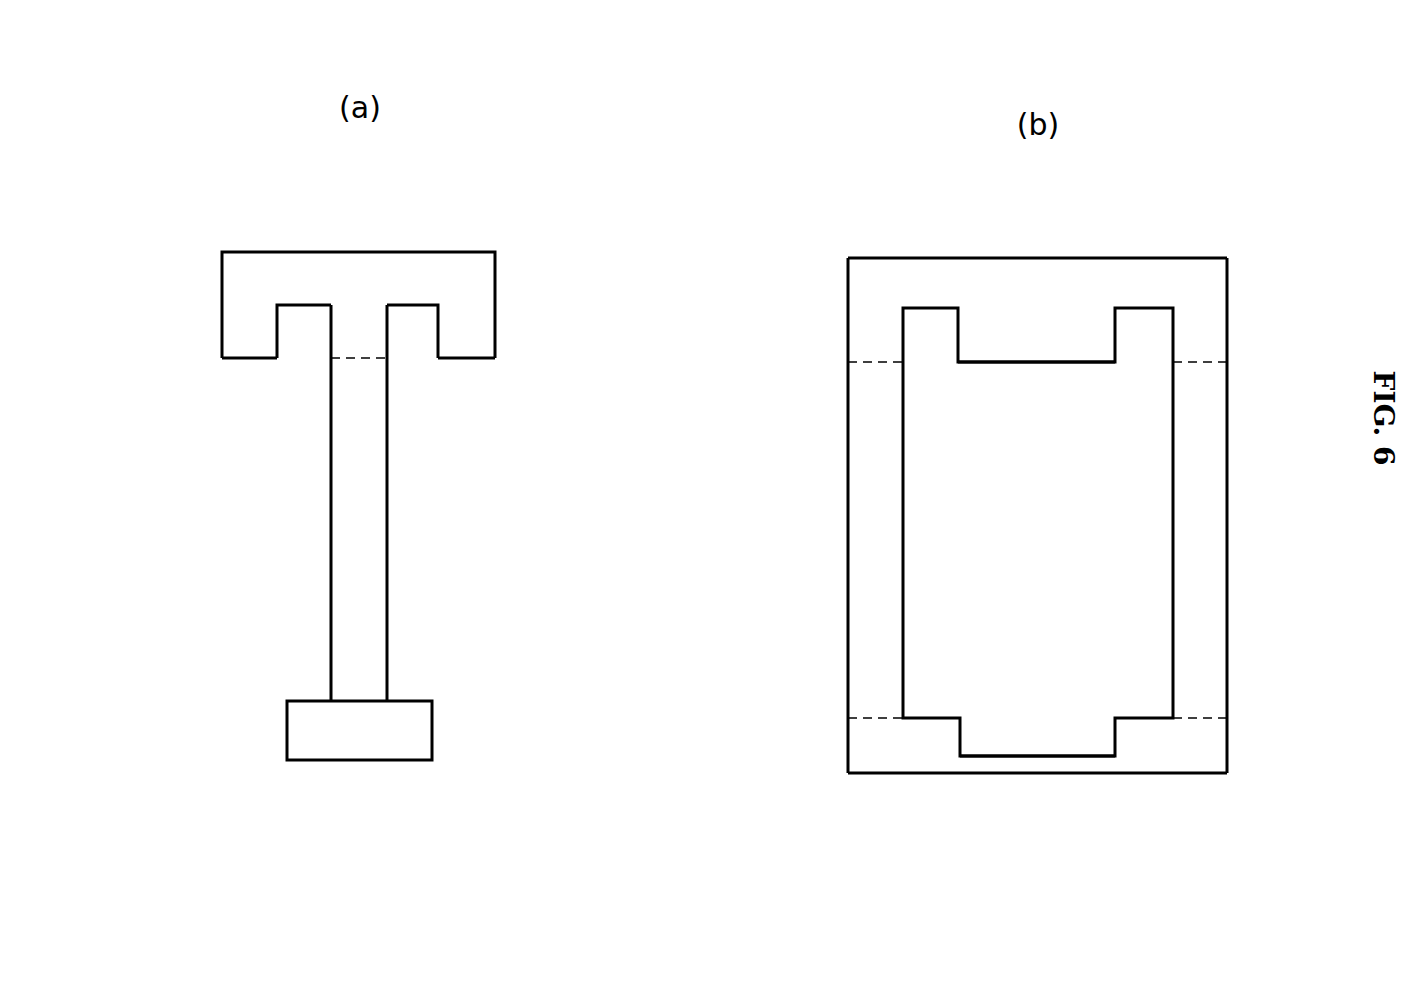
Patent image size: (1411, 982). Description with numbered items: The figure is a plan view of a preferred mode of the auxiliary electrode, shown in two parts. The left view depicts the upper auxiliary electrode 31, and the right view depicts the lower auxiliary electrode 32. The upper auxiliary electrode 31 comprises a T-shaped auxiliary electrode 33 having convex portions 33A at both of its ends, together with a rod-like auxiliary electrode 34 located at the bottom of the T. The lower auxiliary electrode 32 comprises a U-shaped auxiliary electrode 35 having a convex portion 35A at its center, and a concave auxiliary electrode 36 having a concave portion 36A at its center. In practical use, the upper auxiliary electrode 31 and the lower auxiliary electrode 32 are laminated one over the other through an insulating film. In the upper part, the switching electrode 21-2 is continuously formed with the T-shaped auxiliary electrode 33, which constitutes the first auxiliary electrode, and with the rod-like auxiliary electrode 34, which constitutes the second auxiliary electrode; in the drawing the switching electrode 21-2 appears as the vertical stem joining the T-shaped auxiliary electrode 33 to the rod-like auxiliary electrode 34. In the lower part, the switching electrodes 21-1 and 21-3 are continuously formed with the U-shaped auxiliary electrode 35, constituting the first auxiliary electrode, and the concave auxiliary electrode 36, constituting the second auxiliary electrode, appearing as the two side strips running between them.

The upper auxiliary electrode 31 is at (365, 461).
The lower auxiliary electrode 32 is at (1026, 512).
The T-shaped auxiliary electrode 33 is at (486, 306).
The convex portions 33A is at (240, 346).
The rod-like auxiliary electrode 34 is at (430, 741).
The switching electrode 21-2 is at (343, 527).
The switching electrode 21-1 is at (863, 566).
The switching electrode 21-3 is at (1205, 578).
The U-shaped auxiliary electrode 35 is at (1046, 318).
The convex portion 35A is at (1030, 362).
The concave auxiliary electrode 36 is at (1050, 765).
The concave portion 36A is at (1010, 737).